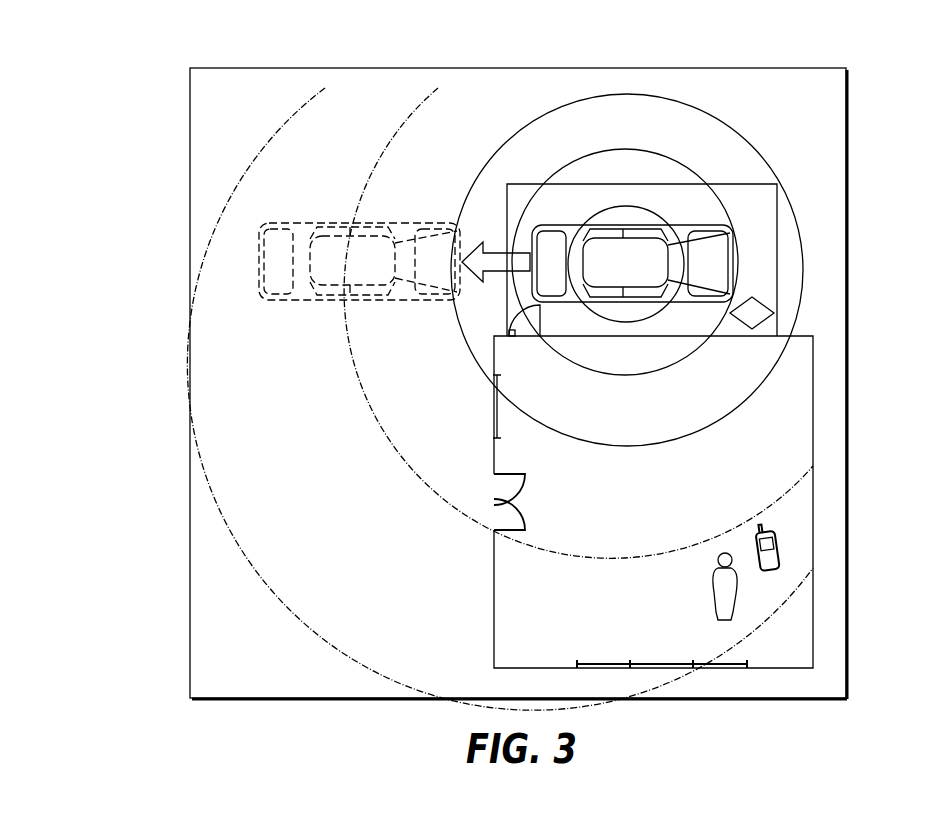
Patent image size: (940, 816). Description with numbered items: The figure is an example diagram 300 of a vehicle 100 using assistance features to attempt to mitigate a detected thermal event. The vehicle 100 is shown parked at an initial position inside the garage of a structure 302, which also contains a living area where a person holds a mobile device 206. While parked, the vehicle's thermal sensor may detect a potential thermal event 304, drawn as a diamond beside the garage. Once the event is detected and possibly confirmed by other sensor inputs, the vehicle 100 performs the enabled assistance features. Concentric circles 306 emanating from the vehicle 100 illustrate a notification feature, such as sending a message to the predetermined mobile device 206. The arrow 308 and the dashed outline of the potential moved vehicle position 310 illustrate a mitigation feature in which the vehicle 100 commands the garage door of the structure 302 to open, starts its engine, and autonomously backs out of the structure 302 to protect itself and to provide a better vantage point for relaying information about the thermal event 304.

The diagram 300 is at (140, 120).
The structure 302 is at (813, 500).
The thermal event 304 is at (775, 313).
The concentric circles 306 is at (312, 448).
The arrow 308 is at (505, 258).
The potential moved vehicle position 310 is at (352, 222).
The vehicle 100 is at (707, 208).
The mobile device 206 is at (778, 548).